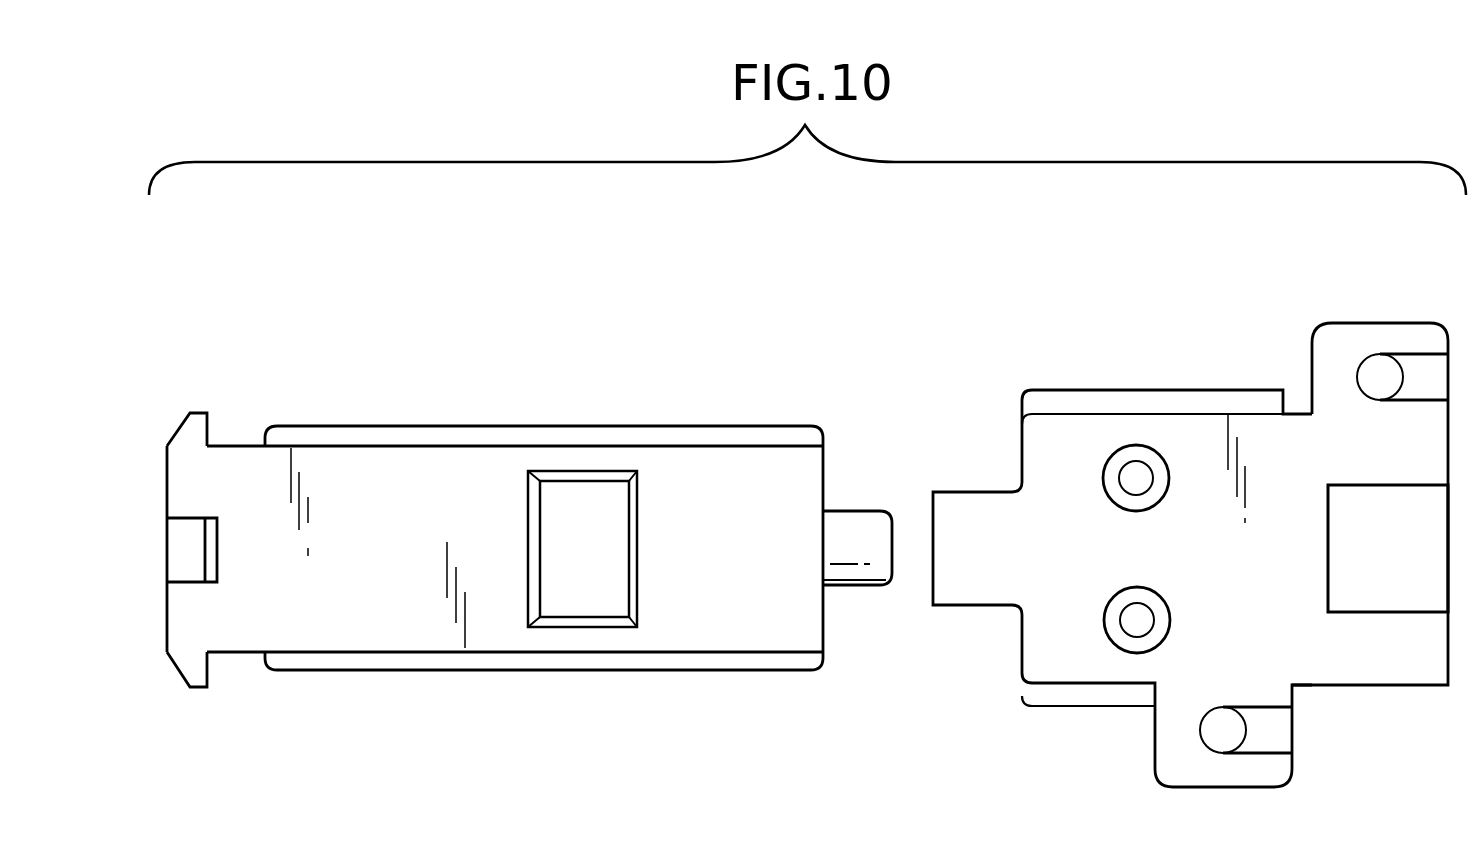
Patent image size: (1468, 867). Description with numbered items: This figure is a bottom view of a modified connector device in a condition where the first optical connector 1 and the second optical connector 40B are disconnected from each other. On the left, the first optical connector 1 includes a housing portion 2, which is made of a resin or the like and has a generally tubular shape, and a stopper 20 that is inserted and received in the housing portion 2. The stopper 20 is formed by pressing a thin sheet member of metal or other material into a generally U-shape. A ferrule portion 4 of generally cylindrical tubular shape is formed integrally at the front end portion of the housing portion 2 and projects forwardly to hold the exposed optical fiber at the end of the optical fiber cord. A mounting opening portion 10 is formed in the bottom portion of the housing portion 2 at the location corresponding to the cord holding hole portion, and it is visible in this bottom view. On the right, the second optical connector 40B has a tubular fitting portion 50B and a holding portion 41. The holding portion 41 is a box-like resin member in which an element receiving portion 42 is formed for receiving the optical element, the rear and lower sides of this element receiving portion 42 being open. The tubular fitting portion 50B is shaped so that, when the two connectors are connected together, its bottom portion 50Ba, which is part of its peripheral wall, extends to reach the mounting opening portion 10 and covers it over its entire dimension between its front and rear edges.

The first optical connector 1 is at (502, 377).
The housing portion 2 is at (392, 632).
The ferrule portion 4 is at (874, 590).
The mounting opening portion 10 is at (629, 586).
The stopper 20 is at (630, 515).
The second optical connector 40B is at (1210, 308).
The holding portion 41 is at (1345, 687).
The element receiving portion 42 is at (1388, 548).
The tubular fitting portion 50B is at (1077, 672).
The bottom portion 50Ba is at (966, 592).